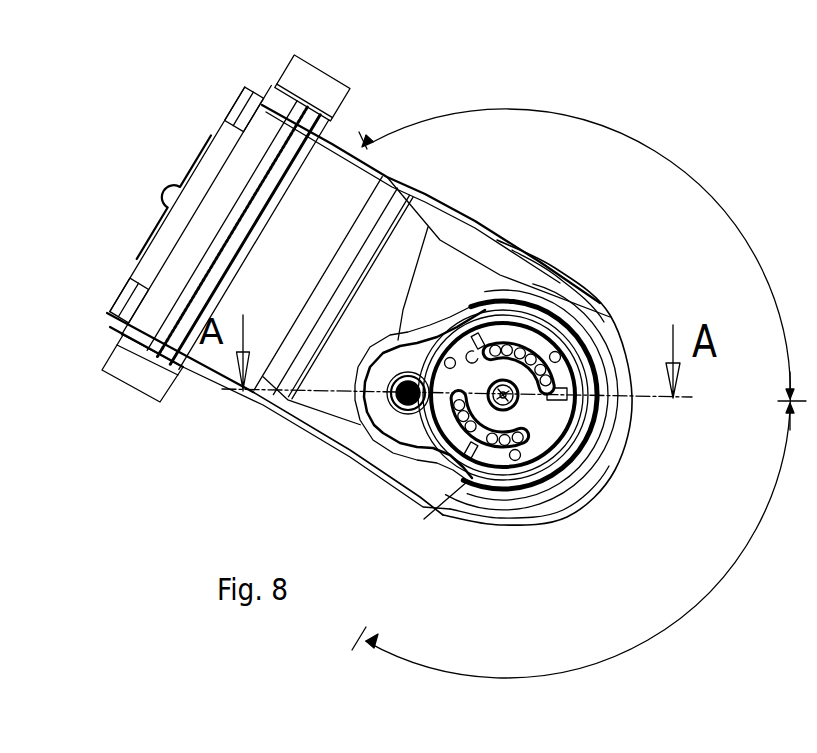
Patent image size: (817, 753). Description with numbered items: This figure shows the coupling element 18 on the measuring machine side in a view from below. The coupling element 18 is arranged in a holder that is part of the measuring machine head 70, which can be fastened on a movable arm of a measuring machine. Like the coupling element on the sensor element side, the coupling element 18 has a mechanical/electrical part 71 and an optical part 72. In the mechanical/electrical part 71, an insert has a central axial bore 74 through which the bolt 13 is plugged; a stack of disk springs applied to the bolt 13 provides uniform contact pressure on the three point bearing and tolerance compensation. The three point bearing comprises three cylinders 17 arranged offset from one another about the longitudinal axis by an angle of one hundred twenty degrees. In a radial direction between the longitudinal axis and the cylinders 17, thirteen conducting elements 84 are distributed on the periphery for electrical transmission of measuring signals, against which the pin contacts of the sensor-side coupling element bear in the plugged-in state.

The bolt 13 is at (518, 395).
The cylinders 17 is at (488, 330).
The coupling element on the measuring machine side 18 is at (634, 118).
The measuring machine head 70 is at (183, 163).
The mechanical/electrical part 71 is at (537, 430).
The optical part 72 is at (392, 416).
The central axial bore 74 is at (520, 403).
The conducting elements 84 is at (520, 340).